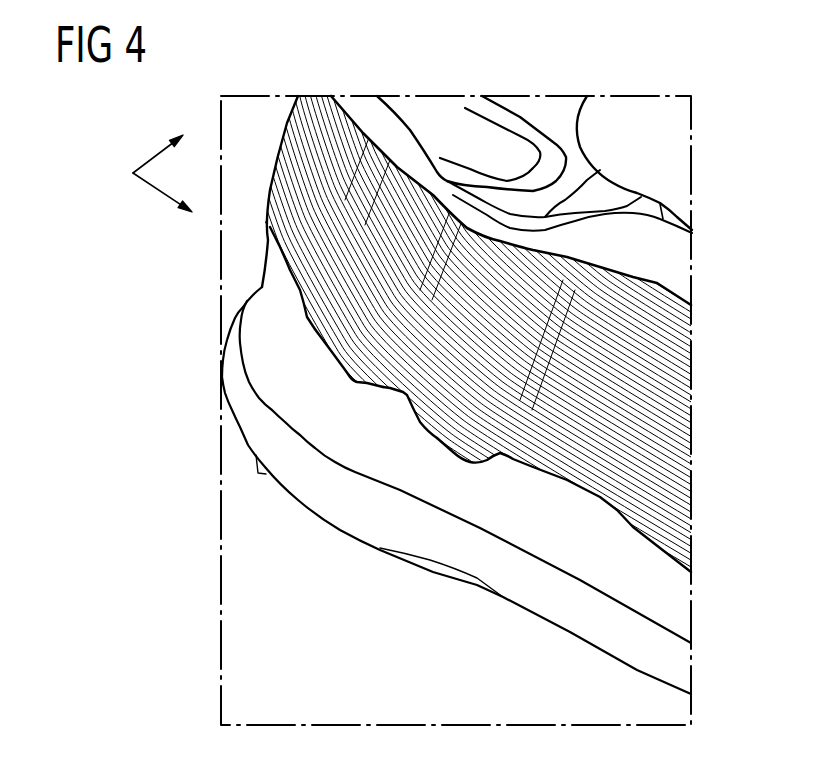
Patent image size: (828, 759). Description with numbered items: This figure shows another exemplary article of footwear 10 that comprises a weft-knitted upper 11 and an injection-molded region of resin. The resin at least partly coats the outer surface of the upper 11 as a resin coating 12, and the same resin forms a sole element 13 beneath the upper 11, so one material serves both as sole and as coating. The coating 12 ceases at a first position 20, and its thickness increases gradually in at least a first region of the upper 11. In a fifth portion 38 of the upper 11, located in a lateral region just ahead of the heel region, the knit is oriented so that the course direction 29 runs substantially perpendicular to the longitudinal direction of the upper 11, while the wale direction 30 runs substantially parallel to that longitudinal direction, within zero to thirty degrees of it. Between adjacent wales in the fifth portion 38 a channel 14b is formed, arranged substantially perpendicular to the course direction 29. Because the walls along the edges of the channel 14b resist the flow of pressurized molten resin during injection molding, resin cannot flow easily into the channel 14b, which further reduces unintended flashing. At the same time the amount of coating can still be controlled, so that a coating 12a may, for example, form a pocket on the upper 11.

The article of footwear 10 is at (118, 305).
The upper 11 is at (330, 300).
The resin coating 12 is at (295, 358).
The coating 12a is at (402, 395).
The sole element 13 is at (258, 418).
The channel 14b is at (364, 374).
The first position 20 is at (425, 437).
The course direction 29 is at (150, 160).
The wale direction 30 is at (153, 187).
The fifth portion 38 is at (407, 410).